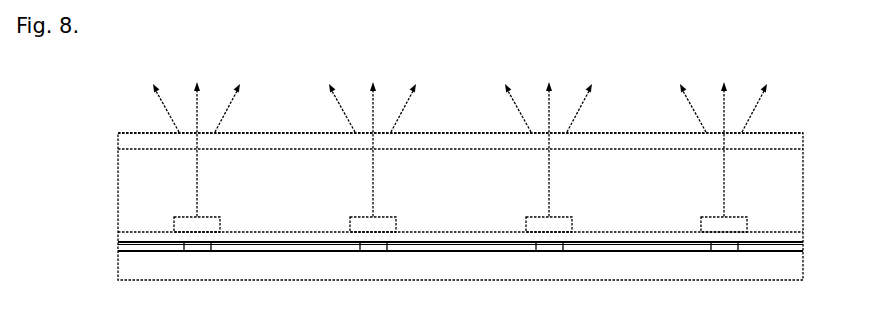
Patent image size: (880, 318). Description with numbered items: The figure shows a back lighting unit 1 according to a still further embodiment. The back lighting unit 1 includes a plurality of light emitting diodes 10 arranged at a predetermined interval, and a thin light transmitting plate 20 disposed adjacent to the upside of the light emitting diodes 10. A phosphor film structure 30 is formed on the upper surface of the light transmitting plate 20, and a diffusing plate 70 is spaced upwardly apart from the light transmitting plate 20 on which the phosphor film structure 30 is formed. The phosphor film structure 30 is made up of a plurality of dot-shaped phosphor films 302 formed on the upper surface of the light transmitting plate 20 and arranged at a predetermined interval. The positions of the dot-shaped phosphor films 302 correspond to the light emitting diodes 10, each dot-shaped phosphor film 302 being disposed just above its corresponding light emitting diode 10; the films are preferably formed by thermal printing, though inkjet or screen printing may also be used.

The back lighting unit 1 is at (802, 104).
The light emitting diodes 10 is at (190, 245).
The light transmitting plate 20 is at (803, 243).
The phosphor film structure 30 is at (773, 209).
The diffusing plate 70 is at (803, 141).
The dot-shaped phosphor films 302 is at (223, 201).